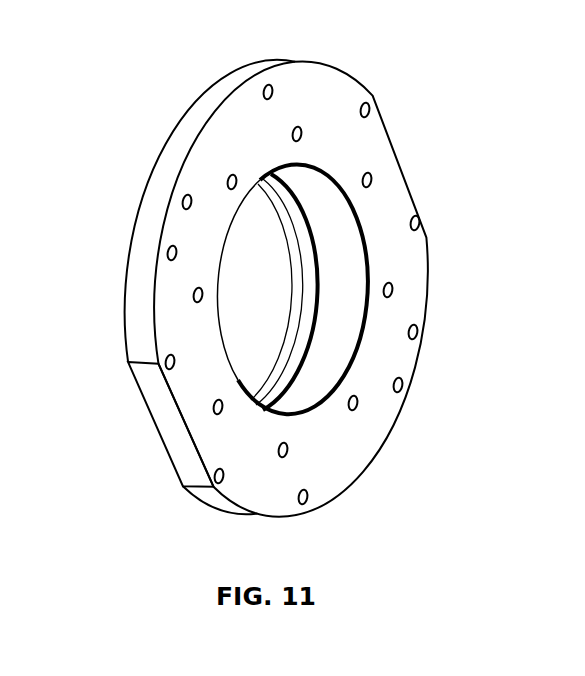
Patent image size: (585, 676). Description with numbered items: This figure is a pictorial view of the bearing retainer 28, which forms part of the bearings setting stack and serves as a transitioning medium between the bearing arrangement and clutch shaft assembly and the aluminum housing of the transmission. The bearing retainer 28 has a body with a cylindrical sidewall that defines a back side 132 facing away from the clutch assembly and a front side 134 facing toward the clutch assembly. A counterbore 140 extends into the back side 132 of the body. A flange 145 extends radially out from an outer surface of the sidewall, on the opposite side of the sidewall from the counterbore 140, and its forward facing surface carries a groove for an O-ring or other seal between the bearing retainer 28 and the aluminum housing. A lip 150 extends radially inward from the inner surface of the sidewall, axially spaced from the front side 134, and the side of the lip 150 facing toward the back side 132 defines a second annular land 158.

The bearing retainer 28 is at (291, 261).
The back side 132 is at (392, 472).
The front side 134 is at (152, 443).
The flange 145 is at (341, 84).
The counterbore 140 is at (330, 243).
The lip 150 is at (320, 317).
The second annular land 158 is at (258, 398).